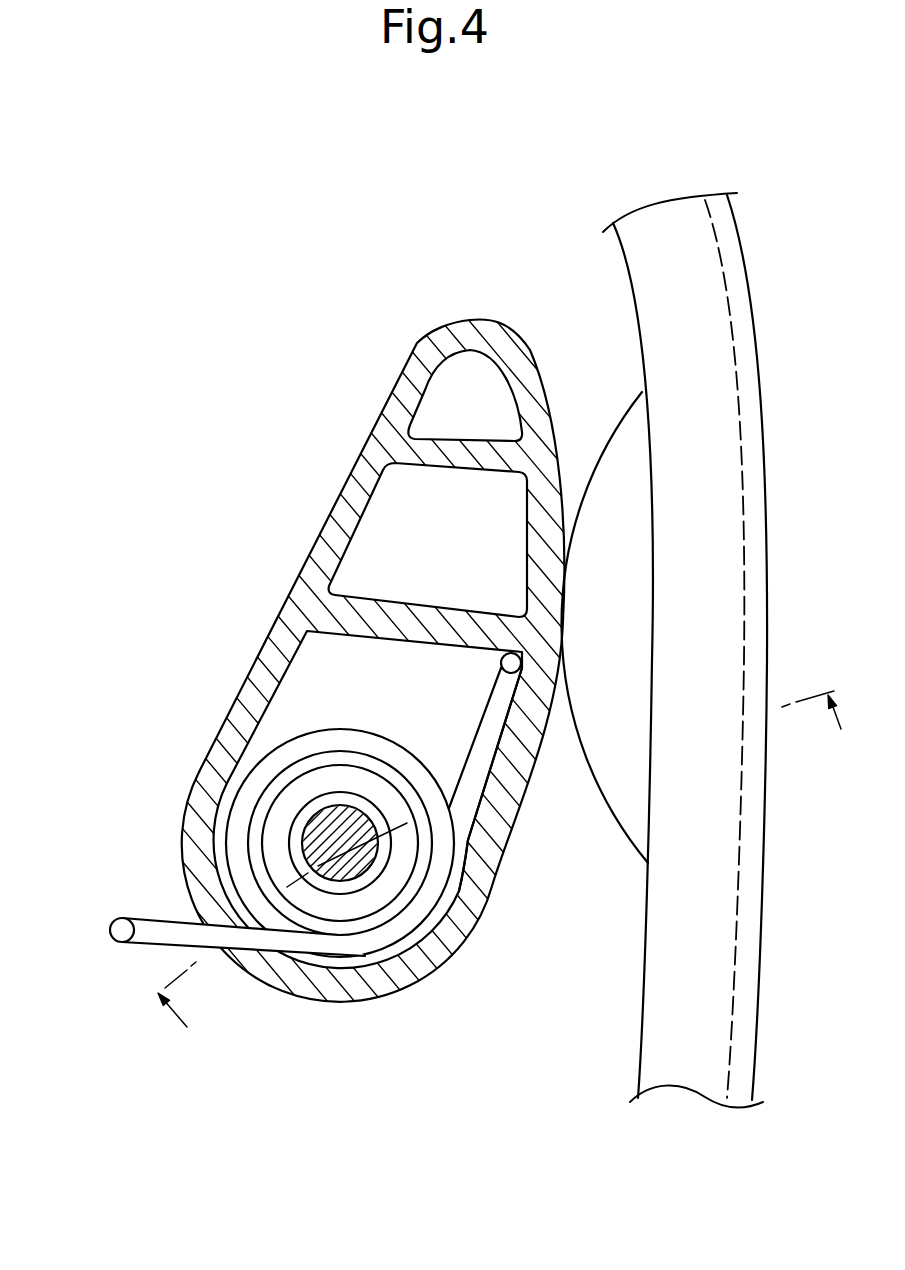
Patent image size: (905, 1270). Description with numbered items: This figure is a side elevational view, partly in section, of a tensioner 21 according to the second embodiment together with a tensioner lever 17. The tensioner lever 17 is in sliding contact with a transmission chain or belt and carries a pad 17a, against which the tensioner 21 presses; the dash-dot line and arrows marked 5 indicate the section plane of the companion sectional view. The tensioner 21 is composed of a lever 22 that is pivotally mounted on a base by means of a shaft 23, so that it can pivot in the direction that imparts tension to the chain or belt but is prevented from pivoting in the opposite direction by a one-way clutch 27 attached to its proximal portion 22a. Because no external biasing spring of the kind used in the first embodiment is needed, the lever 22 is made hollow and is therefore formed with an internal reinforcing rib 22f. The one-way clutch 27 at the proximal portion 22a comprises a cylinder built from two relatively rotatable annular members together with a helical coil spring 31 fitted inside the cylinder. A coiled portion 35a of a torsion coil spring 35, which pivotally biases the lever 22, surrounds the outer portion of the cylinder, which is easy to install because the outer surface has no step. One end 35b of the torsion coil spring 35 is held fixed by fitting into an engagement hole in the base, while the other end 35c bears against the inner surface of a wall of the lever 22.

The section line 5- 5 is at (508, 879).
The tensioner lever 17 is at (636, 266).
The pad 17a is at (621, 438).
The tensioner 21 is at (331, 385).
The lever 22 is at (428, 307).
The proximal portion 22a is at (354, 908).
The internal reinforcing rib 22f is at (453, 455).
The shaft 23 is at (370, 867).
The one-way clutch 27 is at (387, 790).
The helical coil spring 31 is at (387, 848).
The torsion coil spring 35 is at (298, 719).
The coiled portion 35a is at (345, 738).
The one end of the torsion coil spring 35b is at (121, 918).
The other end of the torsion coil spring 35c is at (504, 656).